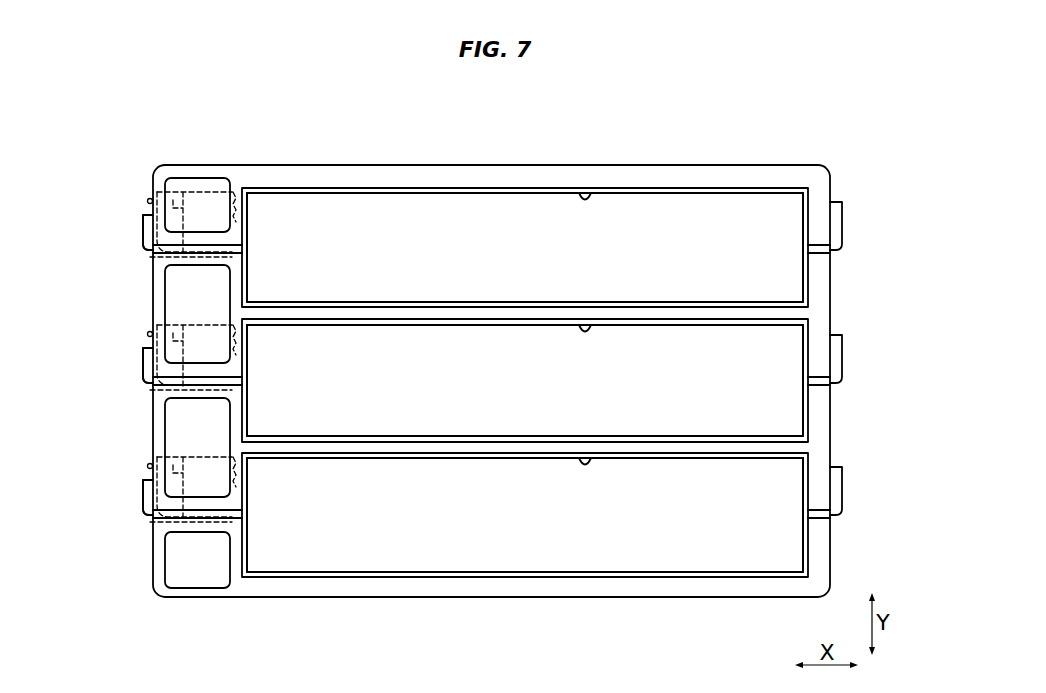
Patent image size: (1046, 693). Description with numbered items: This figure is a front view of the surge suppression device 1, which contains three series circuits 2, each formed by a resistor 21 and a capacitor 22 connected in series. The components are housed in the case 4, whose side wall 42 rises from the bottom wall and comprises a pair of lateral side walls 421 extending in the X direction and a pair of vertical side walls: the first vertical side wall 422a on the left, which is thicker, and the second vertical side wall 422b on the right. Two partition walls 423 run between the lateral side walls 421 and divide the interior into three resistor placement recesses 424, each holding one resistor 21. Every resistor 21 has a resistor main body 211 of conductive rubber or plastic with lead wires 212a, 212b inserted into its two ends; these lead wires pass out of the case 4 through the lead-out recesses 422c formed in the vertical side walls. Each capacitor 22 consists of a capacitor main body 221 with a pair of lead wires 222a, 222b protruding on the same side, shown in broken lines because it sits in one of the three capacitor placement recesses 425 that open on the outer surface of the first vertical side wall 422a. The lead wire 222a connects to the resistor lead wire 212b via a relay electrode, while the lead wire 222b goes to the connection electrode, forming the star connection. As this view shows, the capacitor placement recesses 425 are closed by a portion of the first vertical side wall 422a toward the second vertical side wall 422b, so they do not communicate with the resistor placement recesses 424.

The surge suppression device 1 is at (528, 342).
The series circuit 2 is at (891, 348).
The case 4 is at (368, 177).
The resistor 21 is at (473, 513).
The capacitor 22 is at (180, 237).
The side wall 42 is at (588, 583).
The resistor main body 211 is at (642, 513).
The lead wire 212a is at (840, 210).
The lead wire 212b is at (147, 217).
The capacitor main body 221 is at (175, 242).
The lead wire 222a is at (148, 199).
The lead wire 222b is at (152, 255).
The lateral side wall 421 is at (444, 177).
The first vertical side wall 422a is at (147, 368).
The second vertical side wall 422b is at (818, 425).
The lead-out recess 422c is at (230, 247).
The partition wall 423 is at (428, 318).
The resistor placement recess 424 is at (589, 193).
The capacitor placement recess 425 is at (205, 203).